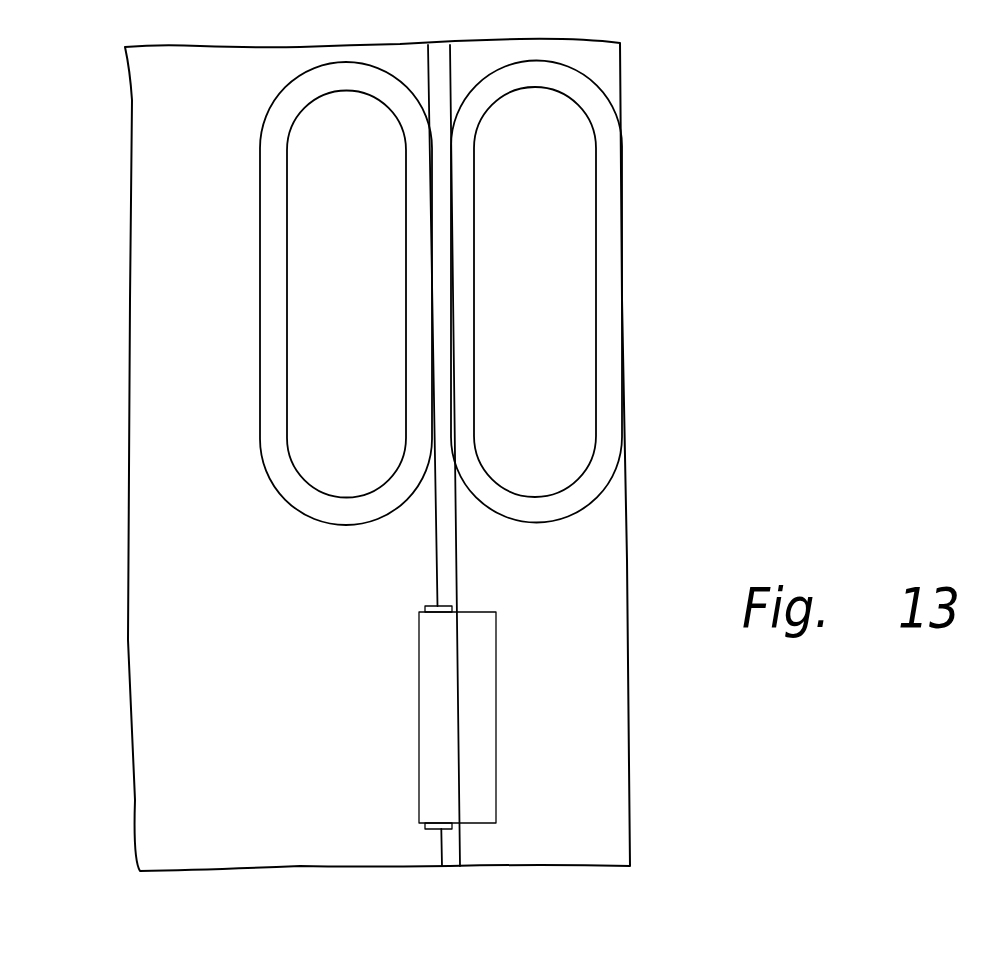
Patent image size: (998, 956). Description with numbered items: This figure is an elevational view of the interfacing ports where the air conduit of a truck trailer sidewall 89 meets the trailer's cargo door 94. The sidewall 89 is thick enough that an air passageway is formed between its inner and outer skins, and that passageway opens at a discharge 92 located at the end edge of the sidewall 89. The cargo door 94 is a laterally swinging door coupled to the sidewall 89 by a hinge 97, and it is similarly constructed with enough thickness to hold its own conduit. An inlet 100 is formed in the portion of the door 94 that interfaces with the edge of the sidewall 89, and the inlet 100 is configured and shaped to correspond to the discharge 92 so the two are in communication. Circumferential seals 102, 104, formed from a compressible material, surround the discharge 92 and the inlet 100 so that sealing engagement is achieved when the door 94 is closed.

The sidewall 89 is at (630, 752).
The discharge 92 is at (577, 317).
The cargo door 94 is at (238, 566).
The hinge 97 is at (491, 721).
The inlet 100 is at (300, 366).
The circumferential seal 102 is at (262, 246).
The circumferential seal 104 is at (610, 188).